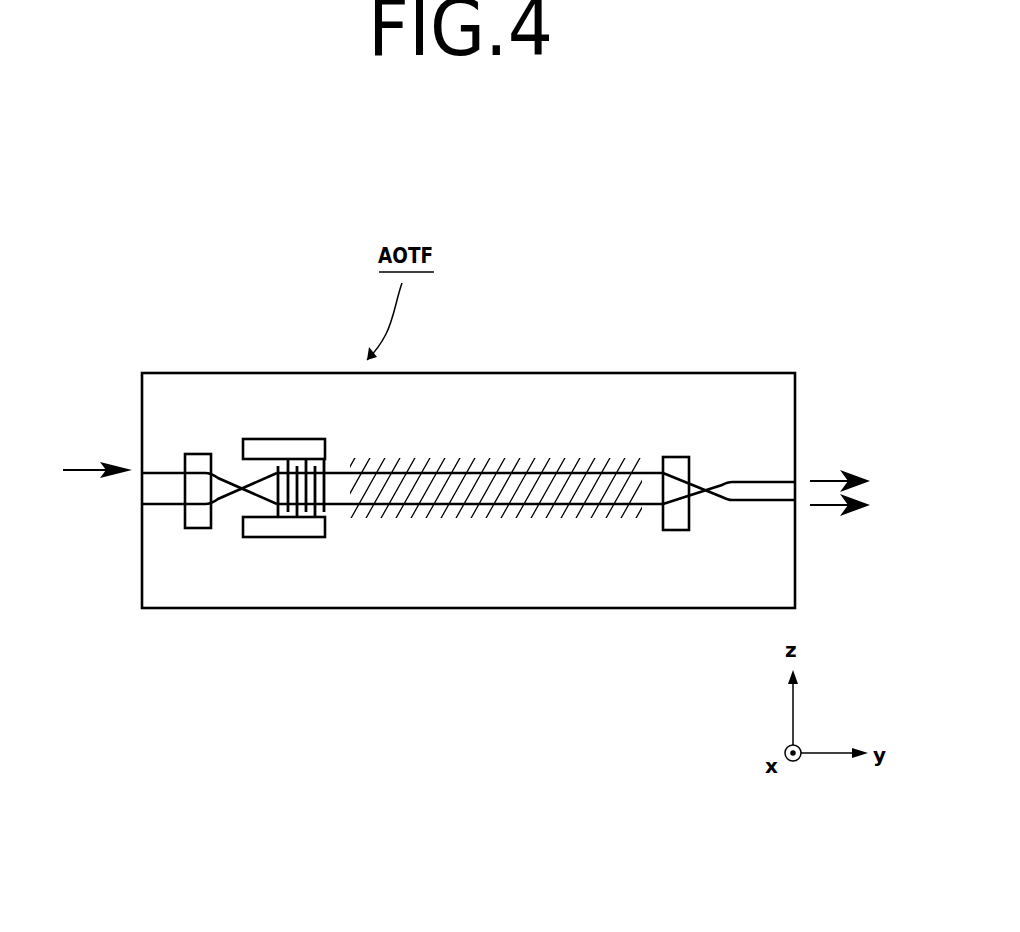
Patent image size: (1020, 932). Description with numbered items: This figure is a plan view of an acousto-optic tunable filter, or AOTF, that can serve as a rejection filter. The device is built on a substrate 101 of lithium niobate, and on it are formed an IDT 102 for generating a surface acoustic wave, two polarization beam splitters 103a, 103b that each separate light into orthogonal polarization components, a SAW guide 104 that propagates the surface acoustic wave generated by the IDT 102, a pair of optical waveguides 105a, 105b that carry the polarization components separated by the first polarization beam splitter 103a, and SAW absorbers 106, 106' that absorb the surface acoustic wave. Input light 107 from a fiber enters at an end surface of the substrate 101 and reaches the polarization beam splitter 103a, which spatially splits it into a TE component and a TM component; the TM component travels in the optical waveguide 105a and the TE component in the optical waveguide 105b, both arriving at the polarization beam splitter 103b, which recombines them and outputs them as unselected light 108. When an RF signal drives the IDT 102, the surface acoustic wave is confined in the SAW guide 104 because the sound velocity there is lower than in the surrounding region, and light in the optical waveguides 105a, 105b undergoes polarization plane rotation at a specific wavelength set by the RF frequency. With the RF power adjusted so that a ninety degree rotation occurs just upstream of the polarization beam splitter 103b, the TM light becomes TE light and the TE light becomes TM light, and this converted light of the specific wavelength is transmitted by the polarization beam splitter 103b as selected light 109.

The substrate 101 is at (535, 373).
The IDT 102 is at (278, 439).
The polarization beam splitter 103a is at (233, 492).
The polarization beam splitter 103b is at (706, 491).
The SAW guide 104 is at (413, 458).
The optical waveguide 105a is at (523, 471).
The optical waveguide 105b is at (520, 507).
The SAW absorber 106 is at (679, 463).
The SAW absorber 106' is at (201, 460).
The input light 107 is at (85, 468).
The unselected light 108 is at (823, 478).
The selected light 109 is at (823, 510).